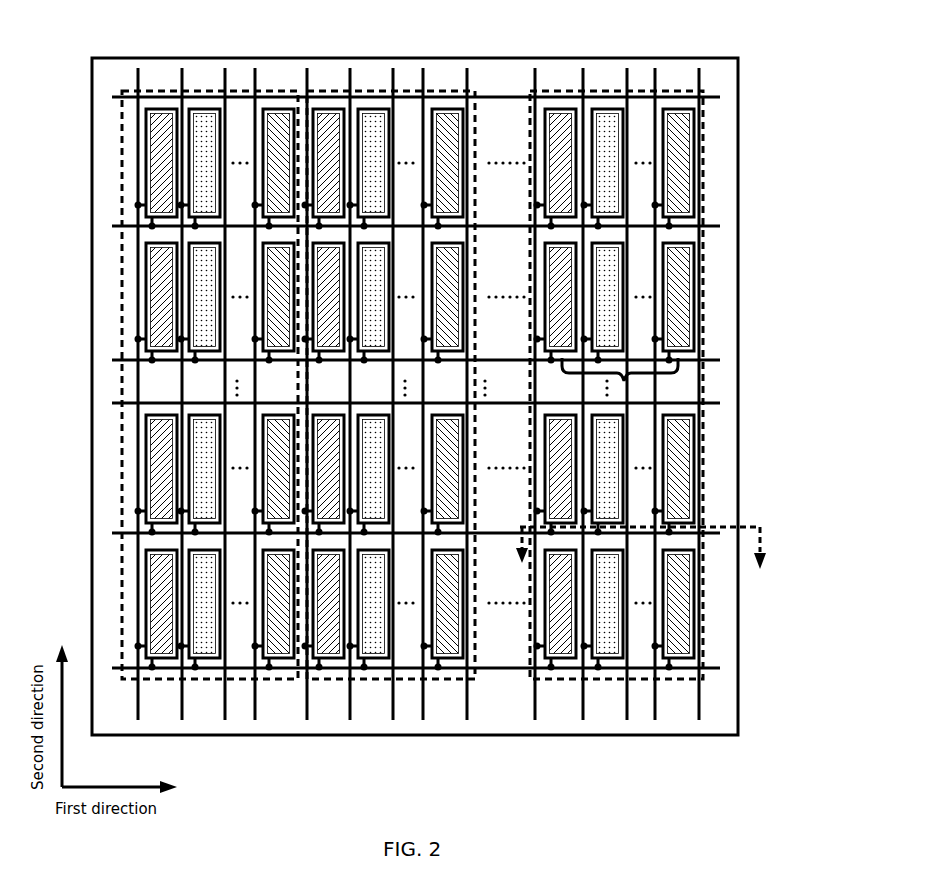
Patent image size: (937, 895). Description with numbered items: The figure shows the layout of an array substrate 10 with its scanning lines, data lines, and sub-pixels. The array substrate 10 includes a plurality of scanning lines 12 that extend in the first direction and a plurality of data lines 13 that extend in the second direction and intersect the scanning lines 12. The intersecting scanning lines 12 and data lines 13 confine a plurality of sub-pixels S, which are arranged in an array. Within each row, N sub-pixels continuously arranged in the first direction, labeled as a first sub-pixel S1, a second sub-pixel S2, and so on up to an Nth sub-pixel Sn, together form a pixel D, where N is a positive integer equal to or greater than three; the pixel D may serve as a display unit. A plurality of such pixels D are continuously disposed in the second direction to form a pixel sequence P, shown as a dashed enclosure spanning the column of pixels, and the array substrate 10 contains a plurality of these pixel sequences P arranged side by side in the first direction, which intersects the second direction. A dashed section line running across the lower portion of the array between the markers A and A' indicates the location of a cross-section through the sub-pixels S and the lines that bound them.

The array substrate 10 is at (723, 58).
The scanning line 12 is at (112, 227).
The data line 13 is at (255, 690).
The pixel sequence P is at (122, 567).
The first sub-pixel S1 is at (162, 110).
The second sub-pixel S2 is at (202, 110).
The Nth sub-pixel Sn is at (277, 110).
The sub-pixel S is at (682, 295).
The pixel D is at (624, 382).
The section line A is at (636, 554).
The section line A' is at (764, 560).